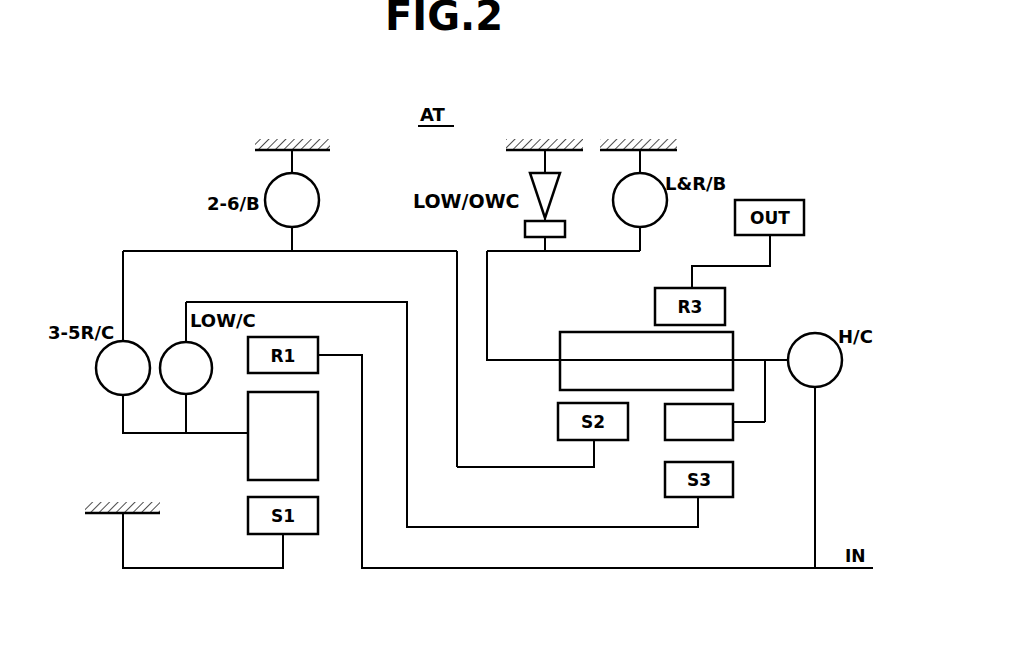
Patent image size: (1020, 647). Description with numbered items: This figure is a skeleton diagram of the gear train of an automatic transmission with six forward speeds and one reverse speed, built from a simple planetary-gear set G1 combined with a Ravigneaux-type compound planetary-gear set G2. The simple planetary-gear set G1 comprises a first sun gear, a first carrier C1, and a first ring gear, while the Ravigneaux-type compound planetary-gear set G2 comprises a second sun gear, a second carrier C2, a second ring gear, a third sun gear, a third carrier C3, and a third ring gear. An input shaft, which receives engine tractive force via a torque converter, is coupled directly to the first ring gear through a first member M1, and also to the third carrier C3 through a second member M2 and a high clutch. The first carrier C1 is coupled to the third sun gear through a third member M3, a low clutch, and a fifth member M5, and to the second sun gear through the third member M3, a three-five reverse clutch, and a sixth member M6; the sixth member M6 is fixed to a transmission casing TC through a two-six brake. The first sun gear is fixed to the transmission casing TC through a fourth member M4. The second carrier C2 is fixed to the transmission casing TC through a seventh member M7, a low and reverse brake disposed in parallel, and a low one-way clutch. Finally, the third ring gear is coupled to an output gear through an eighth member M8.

The first member M1 is at (553, 575).
The second member M2 is at (815, 470).
The third member M3 is at (218, 433).
The fourth member M4 is at (208, 568).
The fifth member M5 is at (505, 527).
The sixth member M6 is at (505, 467).
The seventh member M7 is at (457, 293).
The eighth member M8 is at (701, 266).
The simple planetary-gear set G1 is at (306, 548).
The Ravigneaux-type compound planetary-gear set G2 is at (718, 508).
The first carrier C1 is at (283, 436).
The second carrier C2 is at (607, 332).
The third carrier C3 is at (735, 340).
The transmission casing TC is at (258, 150).